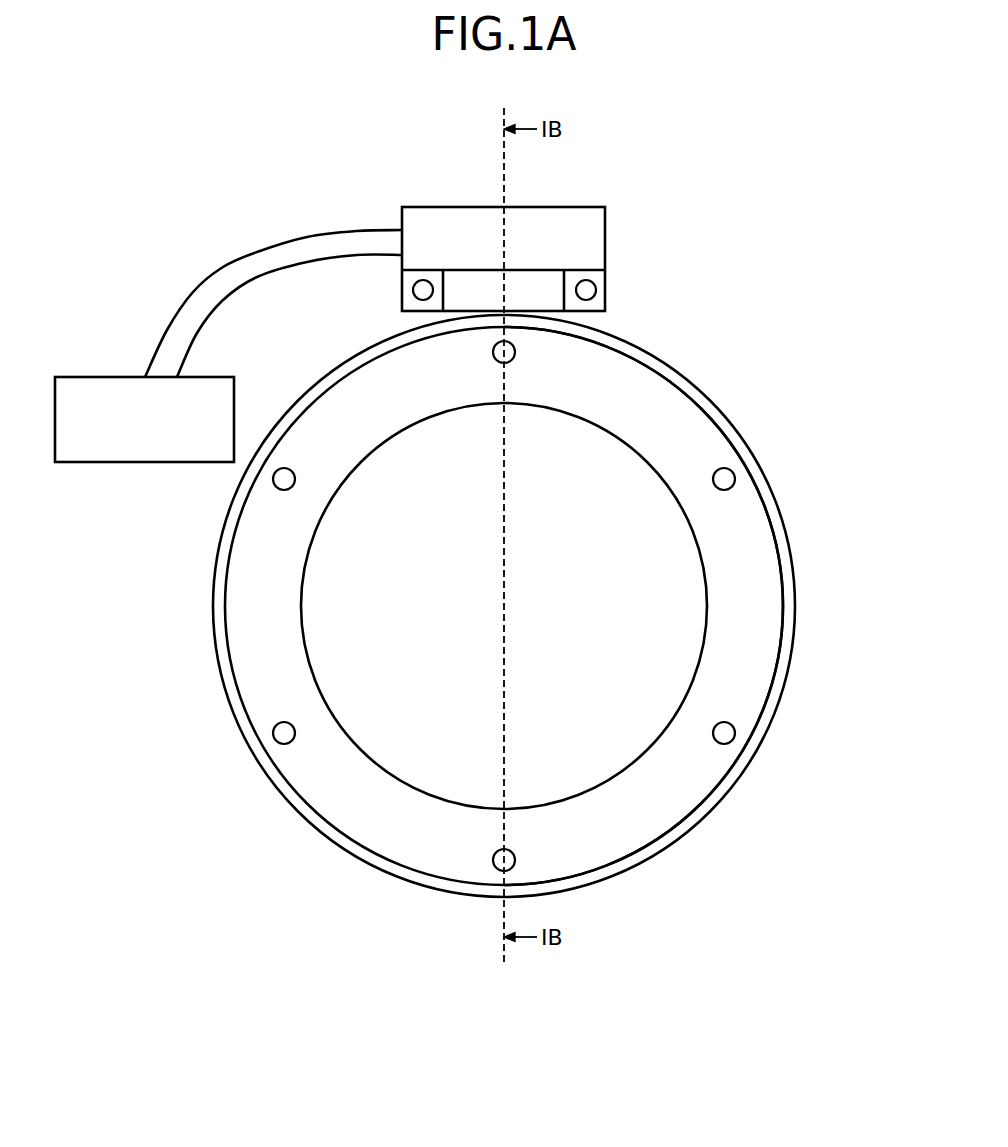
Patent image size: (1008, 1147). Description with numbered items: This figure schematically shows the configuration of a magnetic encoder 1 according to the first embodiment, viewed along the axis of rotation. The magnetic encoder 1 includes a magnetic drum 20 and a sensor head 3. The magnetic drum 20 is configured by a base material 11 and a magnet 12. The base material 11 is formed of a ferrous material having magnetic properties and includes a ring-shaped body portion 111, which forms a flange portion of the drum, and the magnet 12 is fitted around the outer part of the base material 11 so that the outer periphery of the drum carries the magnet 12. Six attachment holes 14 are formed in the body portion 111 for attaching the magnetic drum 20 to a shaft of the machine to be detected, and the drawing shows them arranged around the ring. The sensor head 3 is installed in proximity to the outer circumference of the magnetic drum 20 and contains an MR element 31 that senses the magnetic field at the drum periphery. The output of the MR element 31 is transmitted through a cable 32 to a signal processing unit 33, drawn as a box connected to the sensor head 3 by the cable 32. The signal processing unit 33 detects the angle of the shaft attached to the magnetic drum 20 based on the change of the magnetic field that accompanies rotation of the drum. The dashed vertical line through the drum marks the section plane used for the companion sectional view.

The magnetic encoder 1 is at (760, 351).
The sensor head 3 is at (437, 215).
The MR element 31 is at (520, 285).
The cable 32 is at (273, 253).
The signal processing unit 33 is at (85, 377).
The base material 11 is at (755, 682).
The body portion 111 is at (653, 825).
The magnet 12 is at (717, 415).
The attachment holes 14 is at (728, 473).
The magnetic drum 20 is at (768, 497).